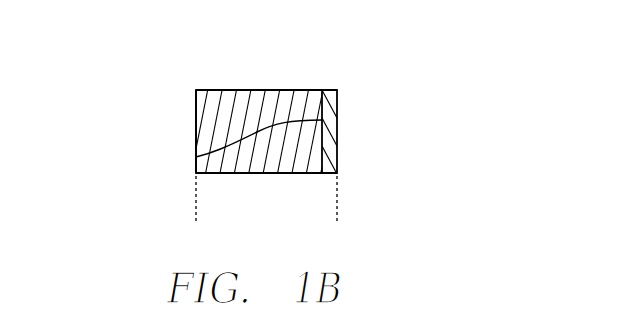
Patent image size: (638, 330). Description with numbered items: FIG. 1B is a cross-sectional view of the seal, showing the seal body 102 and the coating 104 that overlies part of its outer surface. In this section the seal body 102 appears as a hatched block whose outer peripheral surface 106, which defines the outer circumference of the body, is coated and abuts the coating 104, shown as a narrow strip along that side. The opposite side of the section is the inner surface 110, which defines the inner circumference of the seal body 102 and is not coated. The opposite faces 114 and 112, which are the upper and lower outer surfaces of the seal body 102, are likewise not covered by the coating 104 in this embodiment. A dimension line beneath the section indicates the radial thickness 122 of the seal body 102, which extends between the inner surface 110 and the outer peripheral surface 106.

The seal body 102 is at (308, 155).
The coating 104 is at (337, 112).
The outer peripheral surface 106 is at (196, 157).
The inner surface 110 is at (197, 128).
The lower face 112 is at (283, 173).
The upper face 114 is at (223, 90).
The radial thickness 122 is at (337, 213).